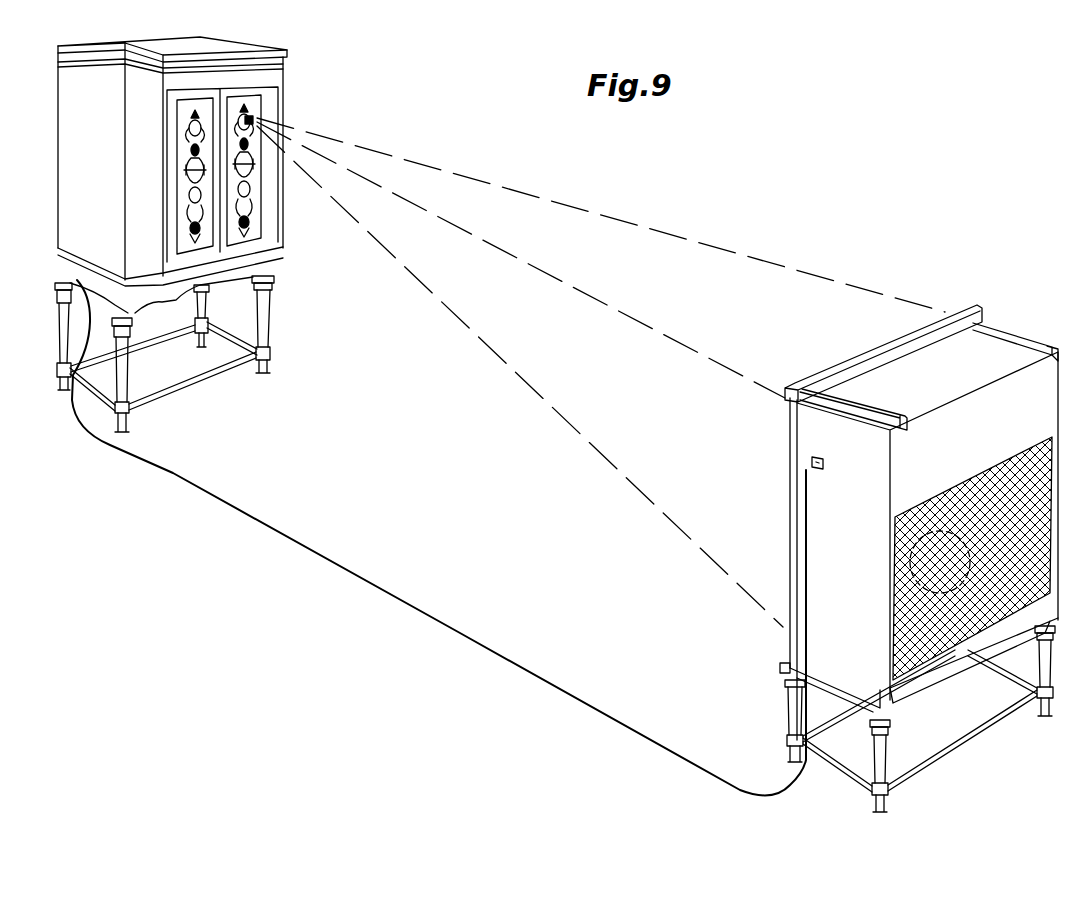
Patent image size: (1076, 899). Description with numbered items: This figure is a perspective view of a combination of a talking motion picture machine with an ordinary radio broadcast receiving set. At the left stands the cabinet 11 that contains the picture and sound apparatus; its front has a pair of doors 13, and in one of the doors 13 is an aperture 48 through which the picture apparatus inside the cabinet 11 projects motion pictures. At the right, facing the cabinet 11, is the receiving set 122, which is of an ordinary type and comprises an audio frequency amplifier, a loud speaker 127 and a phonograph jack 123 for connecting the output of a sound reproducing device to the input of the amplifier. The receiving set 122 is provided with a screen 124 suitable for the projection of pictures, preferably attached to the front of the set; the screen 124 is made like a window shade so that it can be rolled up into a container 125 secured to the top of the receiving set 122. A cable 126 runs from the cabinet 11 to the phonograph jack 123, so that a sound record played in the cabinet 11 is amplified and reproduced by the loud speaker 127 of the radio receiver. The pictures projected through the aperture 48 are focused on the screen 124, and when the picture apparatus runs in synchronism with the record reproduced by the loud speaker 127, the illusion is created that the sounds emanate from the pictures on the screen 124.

The cabinet 11 is at (62, 162).
The doors 13 is at (248, 89).
The aperture 48 is at (256, 117).
The receiving set 122 is at (997, 364).
The phonograph jack 123 is at (823, 458).
The screen 124 is at (790, 480).
The container 125 is at (852, 360).
The cable 126 is at (314, 552).
The loud speaker 127 is at (941, 526).